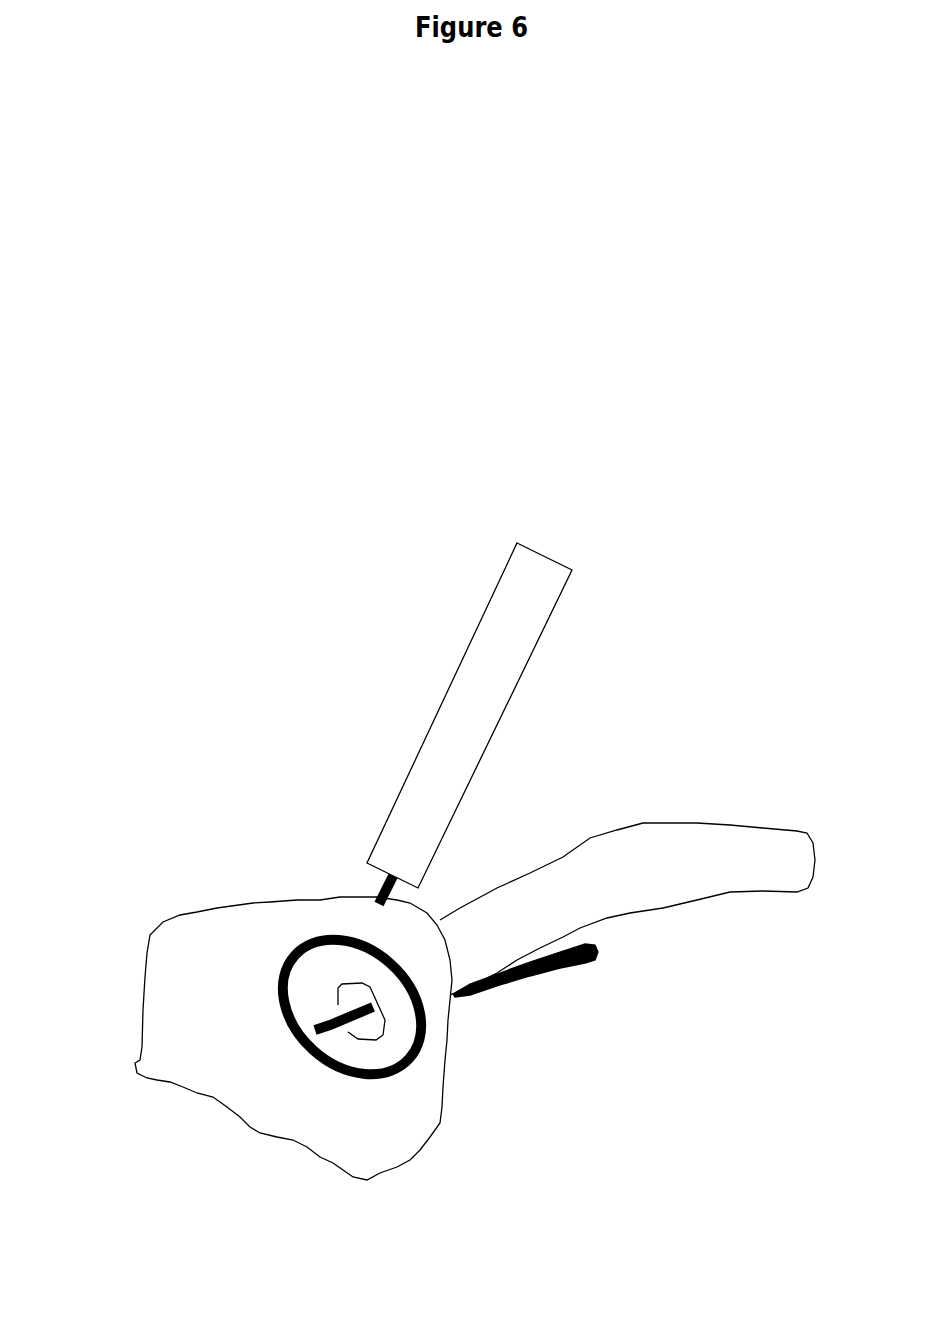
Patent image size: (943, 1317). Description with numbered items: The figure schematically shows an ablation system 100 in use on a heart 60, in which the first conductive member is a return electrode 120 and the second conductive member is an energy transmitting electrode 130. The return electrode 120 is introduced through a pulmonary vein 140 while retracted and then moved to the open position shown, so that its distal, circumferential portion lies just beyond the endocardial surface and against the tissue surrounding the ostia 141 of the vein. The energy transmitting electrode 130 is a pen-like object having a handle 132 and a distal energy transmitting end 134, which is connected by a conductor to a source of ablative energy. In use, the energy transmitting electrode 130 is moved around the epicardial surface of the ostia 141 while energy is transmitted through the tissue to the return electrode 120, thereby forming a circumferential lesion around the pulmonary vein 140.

The system 100 is at (148, 266).
The heart 60 is at (180, 950).
The ostia 141 is at (380, 1022).
The energy transmitting electrode 130 is at (412, 668).
The handle 132 is at (523, 602).
The distal energy transmitting end 134 is at (378, 900).
The pulmonary vein 140 is at (747, 847).
The return electrode 120 is at (568, 985).